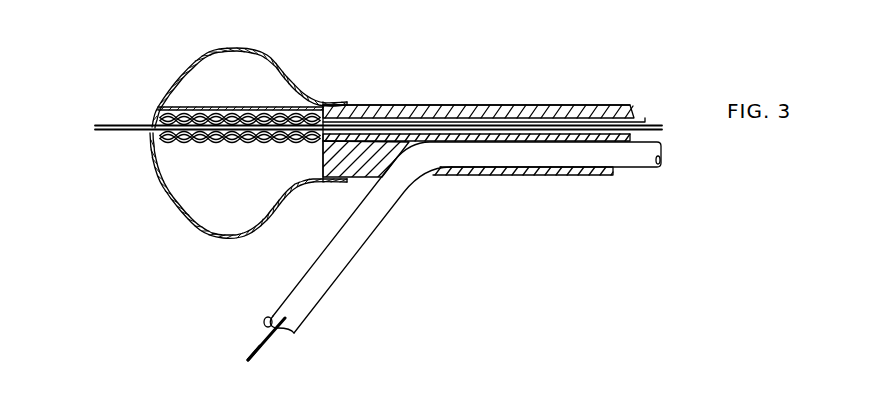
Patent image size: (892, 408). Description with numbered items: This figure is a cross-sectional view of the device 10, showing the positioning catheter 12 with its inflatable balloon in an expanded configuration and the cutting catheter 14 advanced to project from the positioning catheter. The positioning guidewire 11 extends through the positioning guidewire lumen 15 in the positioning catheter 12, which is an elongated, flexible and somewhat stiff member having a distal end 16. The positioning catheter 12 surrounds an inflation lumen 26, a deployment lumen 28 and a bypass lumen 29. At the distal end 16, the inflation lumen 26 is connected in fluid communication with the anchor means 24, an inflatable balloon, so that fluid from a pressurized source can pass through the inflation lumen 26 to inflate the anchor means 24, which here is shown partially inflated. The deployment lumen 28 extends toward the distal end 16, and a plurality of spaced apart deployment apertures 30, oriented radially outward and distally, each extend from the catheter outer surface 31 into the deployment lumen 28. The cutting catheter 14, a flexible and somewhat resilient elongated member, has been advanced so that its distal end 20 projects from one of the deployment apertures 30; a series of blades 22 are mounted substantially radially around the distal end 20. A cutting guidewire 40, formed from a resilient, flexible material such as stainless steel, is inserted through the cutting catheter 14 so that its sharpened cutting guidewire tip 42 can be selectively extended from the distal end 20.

The device 10 is at (394, 44).
The positioning guidewire 11 is at (117, 131).
The positioning catheter 12 is at (467, 103).
The cutting catheter 14 is at (364, 252).
The positioning guidewire lumen 15 is at (273, 88).
The distal end 16 is at (513, 103).
The distal end 20 is at (303, 303).
The blades 22 is at (265, 318).
The anchor means 24 is at (192, 218).
The inflation lumen 26 is at (563, 103).
The deployment lumen 28 is at (558, 180).
The bypass lumen 29 is at (227, 100).
The deployment apertures 30 is at (418, 190).
The catheter outer surface 31 is at (432, 103).
The cutting guidewire 40 is at (270, 345).
The cutting guidewire tip 42 is at (249, 357).